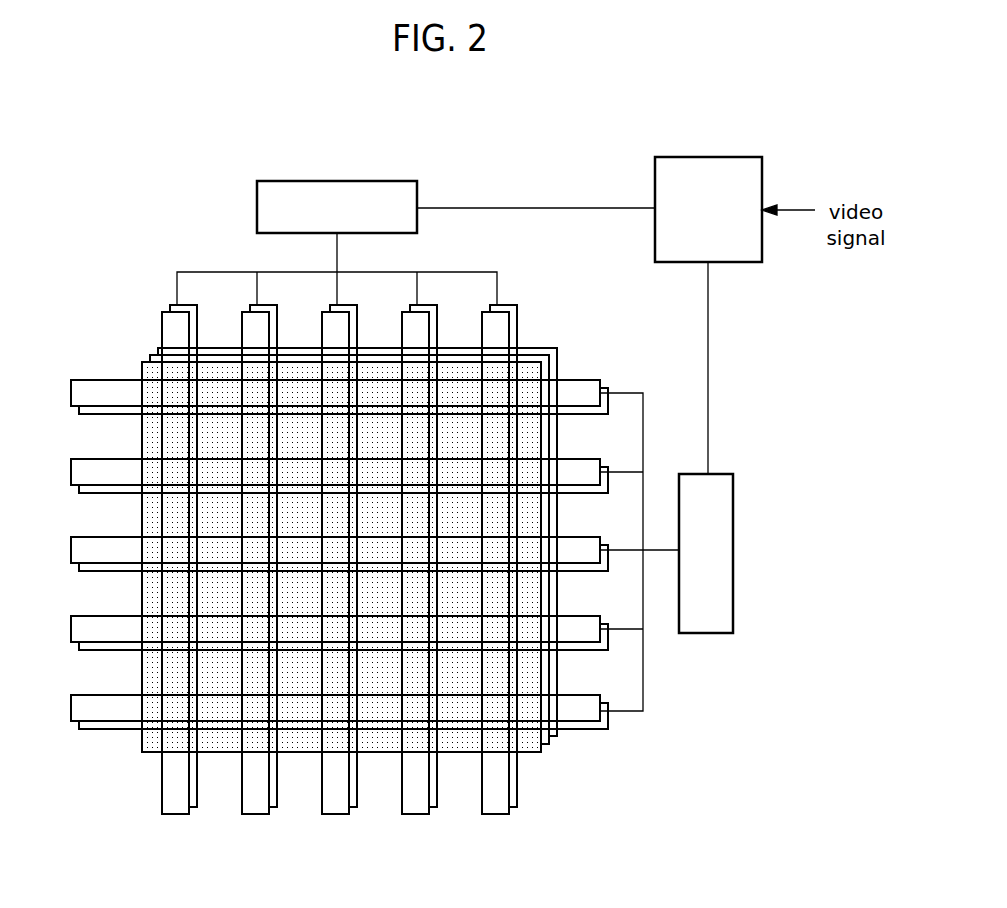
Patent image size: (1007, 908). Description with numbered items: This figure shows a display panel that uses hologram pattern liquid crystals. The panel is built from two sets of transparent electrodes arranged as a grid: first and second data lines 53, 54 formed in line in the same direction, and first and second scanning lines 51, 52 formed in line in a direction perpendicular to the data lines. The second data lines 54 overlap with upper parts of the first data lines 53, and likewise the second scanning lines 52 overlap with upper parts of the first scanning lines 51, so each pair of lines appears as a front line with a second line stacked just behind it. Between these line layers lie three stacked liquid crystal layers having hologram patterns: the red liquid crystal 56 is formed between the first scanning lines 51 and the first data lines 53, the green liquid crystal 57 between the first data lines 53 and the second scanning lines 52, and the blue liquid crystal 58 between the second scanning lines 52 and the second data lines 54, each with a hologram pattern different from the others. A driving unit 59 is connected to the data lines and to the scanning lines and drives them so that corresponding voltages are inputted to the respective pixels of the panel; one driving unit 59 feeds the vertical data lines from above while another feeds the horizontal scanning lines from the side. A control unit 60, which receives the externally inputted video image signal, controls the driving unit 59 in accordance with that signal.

The first scanning line 51 is at (91, 729).
The second scanning line 52 is at (76, 708).
The first data line 53 is at (512, 789).
The second data line 54 is at (492, 814).
The red liquid crystal 56 is at (158, 348).
The green liquid crystal 57 is at (150, 357).
The blue liquid crystal 58 is at (142, 368).
The driving unit 59 is at (367, 185).
The control unit 60 is at (760, 168).